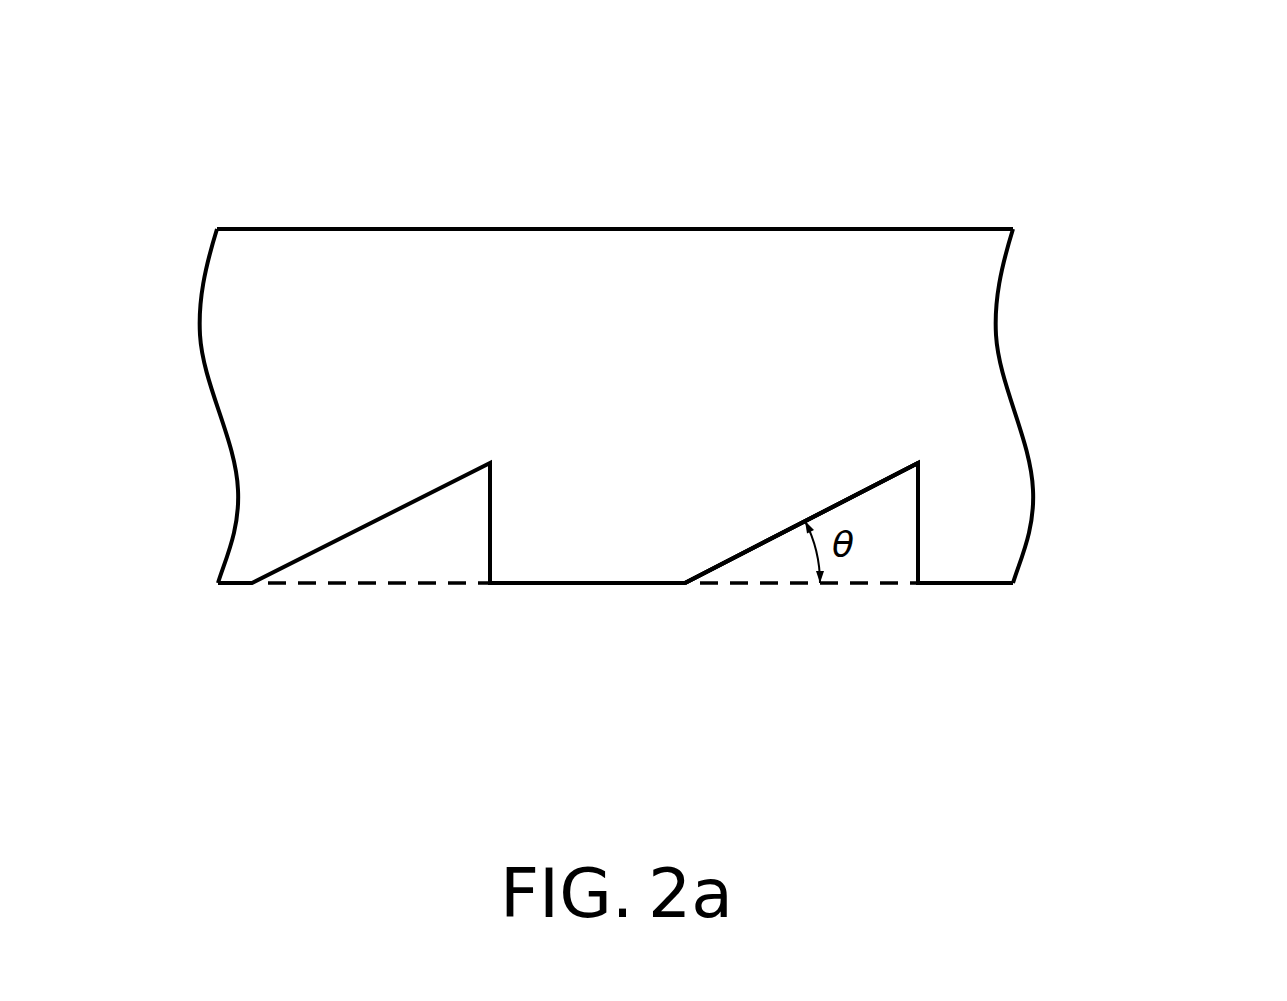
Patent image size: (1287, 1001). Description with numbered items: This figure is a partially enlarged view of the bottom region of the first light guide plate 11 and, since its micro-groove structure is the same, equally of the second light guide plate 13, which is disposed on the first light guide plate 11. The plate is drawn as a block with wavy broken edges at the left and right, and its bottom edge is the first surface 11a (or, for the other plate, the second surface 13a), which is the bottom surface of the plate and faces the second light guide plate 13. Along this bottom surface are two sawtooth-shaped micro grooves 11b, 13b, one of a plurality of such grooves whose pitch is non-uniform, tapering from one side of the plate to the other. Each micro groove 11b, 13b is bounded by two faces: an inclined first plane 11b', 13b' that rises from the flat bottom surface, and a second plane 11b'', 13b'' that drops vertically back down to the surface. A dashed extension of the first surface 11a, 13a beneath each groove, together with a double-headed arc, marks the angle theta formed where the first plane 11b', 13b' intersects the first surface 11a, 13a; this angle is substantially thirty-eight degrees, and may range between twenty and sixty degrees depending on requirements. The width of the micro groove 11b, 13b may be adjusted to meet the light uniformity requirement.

The first light guide plate 11 is at (537, 319).
The second light guide plate 13 is at (148, 102).
The first surface 11a is at (582, 635).
The second surface 13a is at (543, 587).
The micro groove 11b is at (780, 601).
The micro groove 13b is at (780, 601).
The first plane 11b' is at (970, 523).
The first plane 13b' is at (970, 523).
The second plane 11b'' is at (879, 575).
The second plane 13b'' is at (879, 575).